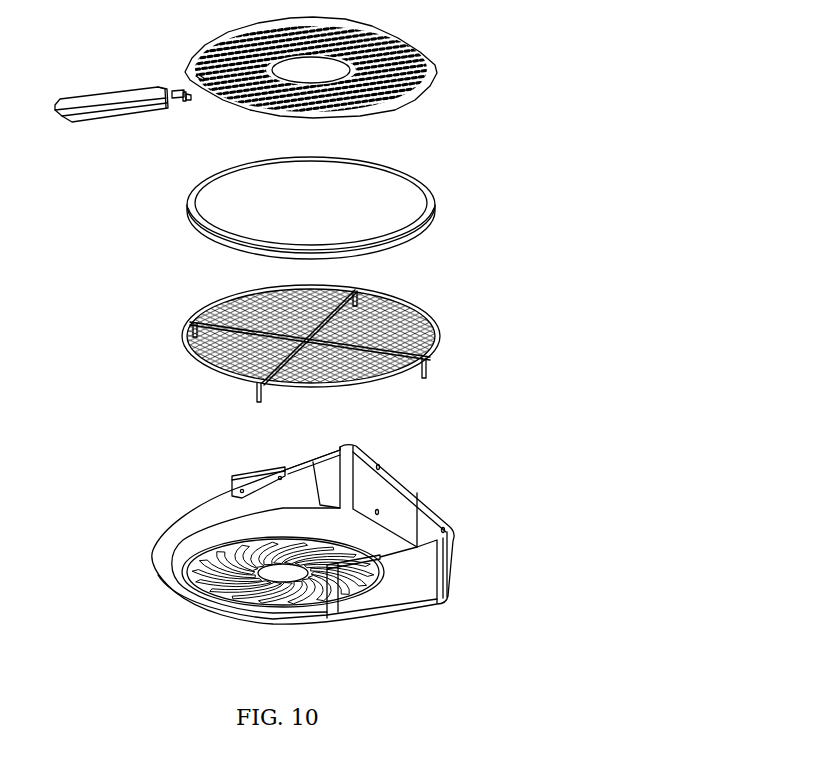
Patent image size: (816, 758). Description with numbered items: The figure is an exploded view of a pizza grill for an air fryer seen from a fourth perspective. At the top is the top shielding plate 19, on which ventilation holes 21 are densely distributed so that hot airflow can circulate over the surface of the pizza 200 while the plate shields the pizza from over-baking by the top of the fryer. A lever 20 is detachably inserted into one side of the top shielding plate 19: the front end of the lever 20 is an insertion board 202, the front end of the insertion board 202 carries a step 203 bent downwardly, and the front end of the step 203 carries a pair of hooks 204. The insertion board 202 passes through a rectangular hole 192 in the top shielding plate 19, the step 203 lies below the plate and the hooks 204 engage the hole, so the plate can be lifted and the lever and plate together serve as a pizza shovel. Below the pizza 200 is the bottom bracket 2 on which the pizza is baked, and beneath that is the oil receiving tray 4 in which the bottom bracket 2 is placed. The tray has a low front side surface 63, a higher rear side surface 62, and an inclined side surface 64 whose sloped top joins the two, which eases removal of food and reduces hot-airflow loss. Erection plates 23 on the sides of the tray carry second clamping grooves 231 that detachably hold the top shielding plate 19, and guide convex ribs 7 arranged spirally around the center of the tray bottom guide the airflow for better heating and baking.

The bottom bracket 2 is at (437, 328).
The oil receiving tray 4 is at (303, 545).
The guide convex rib 7 is at (260, 587).
The top shielding plate 19 is at (310, 70).
The lever 20 is at (117, 100).
The ventilation hole 21 is at (393, 40).
The erection plate 23 is at (257, 483).
The rear side surface 62 is at (395, 493).
The front side surface 63 is at (165, 577).
The inclined side surface 64 is at (395, 587).
The rectangular hole 192 is at (198, 70).
The pizza 200 is at (403, 213).
The insertion board 202 is at (168, 88).
The step 203 is at (183, 102).
The hook 204 is at (188, 98).
The second clamping groove 231 is at (232, 474).